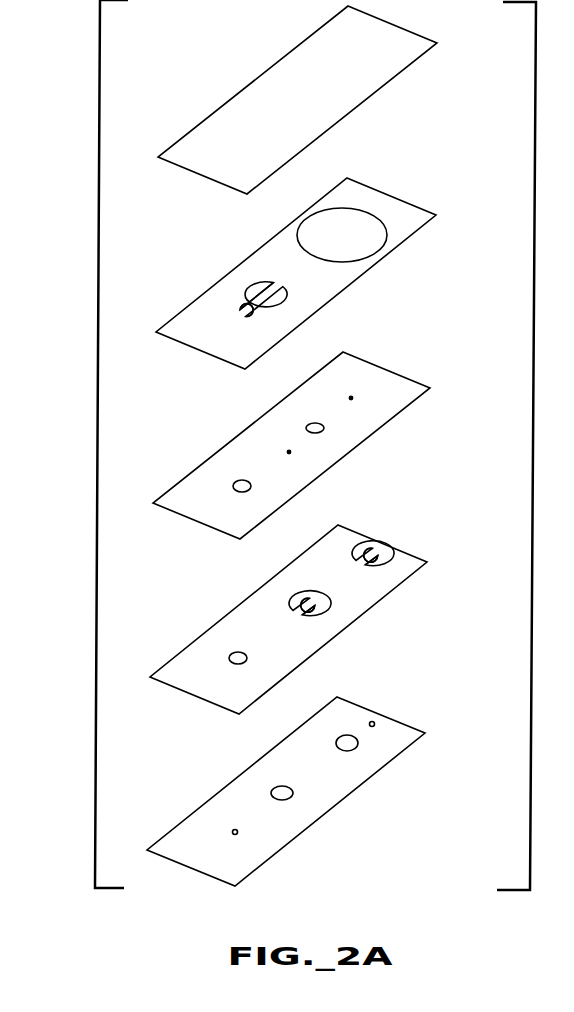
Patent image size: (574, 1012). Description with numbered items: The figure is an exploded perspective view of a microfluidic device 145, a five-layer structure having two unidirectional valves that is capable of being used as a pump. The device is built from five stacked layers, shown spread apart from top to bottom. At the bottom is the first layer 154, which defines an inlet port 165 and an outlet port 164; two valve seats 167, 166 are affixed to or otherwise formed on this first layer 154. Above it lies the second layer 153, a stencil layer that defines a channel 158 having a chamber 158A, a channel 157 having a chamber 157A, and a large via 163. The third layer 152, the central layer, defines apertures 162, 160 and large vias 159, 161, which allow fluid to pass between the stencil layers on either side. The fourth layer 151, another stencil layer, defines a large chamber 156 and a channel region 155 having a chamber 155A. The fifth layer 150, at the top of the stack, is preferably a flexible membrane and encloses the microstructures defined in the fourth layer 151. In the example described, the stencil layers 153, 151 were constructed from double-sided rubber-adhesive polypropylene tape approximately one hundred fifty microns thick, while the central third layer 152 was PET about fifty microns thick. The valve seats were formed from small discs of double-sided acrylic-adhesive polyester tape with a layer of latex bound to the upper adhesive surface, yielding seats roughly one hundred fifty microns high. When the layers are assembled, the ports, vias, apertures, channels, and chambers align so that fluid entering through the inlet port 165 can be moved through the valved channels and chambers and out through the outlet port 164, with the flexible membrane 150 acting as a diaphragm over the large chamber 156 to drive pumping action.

The microfluidic device 145 is at (97, 441).
The fifth layer 150 is at (420, 57).
The fourth layer 151 is at (418, 232).
The third layer 152 is at (415, 405).
The second layer 153 is at (418, 575).
The first layer 154 is at (412, 748).
The channel region 155 is at (253, 298).
The chamber 155A is at (303, 287).
The large chamber 156 is at (363, 209).
The channel 157 is at (312, 612).
The chamber 157A is at (275, 612).
The channel 158 is at (375, 548).
The chamber 158A is at (347, 558).
The large via 159 is at (237, 482).
The aperture 160 is at (289, 452).
The large via 161 is at (317, 433).
The aperture 162 is at (351, 398).
The large via 163 is at (233, 653).
The outlet port 164 is at (233, 829).
The inlet port 165 is at (372, 721).
The valve seat 166 is at (273, 788).
The valve seat 167 is at (348, 752).